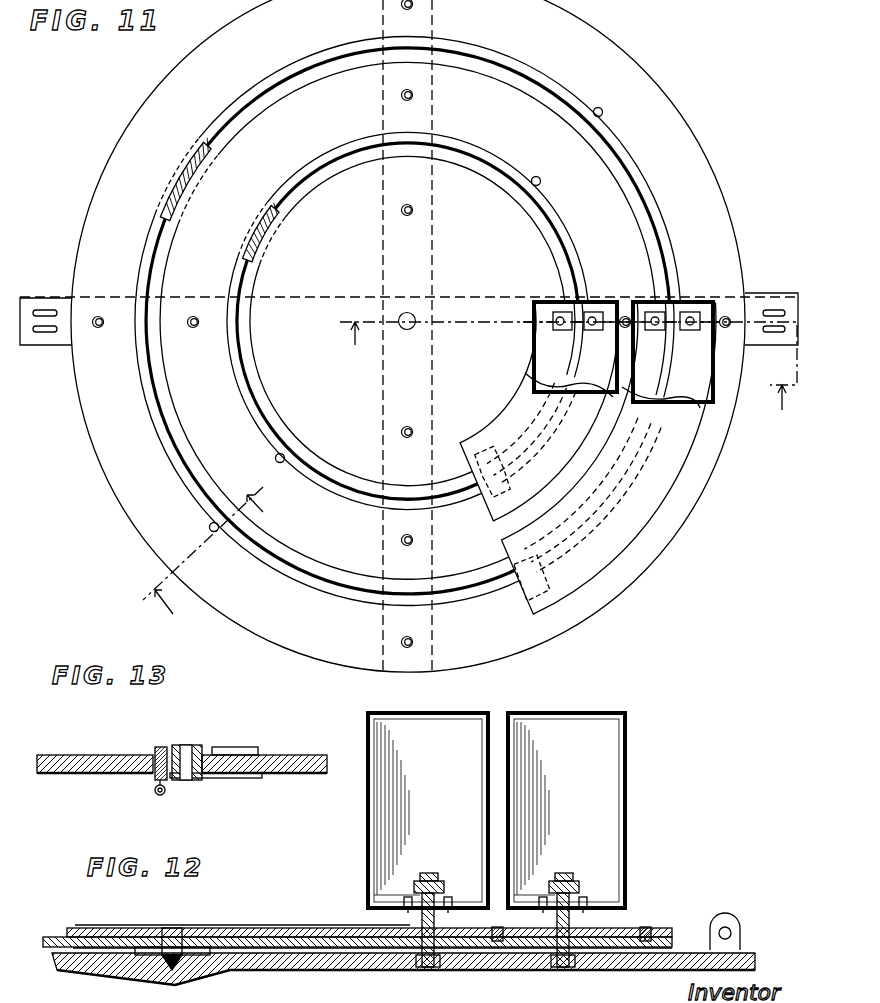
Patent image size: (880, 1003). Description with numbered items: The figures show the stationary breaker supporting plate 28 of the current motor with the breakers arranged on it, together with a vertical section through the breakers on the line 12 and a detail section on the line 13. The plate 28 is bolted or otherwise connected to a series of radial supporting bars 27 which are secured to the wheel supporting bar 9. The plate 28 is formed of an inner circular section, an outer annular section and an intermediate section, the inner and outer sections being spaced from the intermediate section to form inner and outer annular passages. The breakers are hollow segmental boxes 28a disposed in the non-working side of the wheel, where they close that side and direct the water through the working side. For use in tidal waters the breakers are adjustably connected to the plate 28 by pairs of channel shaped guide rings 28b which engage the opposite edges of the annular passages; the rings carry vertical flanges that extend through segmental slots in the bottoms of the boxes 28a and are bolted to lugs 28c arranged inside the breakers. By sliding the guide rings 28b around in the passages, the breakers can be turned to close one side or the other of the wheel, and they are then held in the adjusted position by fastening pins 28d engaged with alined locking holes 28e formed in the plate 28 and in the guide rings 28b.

In FIG. 11, the wheel supporting bar 9 is at (752, 298).
In FIG. 12, the wheel supporting bar 9 is at (302, 962).
In FIG. 11, the section line 12— 12 is at (555, 360).
In FIG. 11, the section line 13— 13 is at (195, 540).
In FIG. 11, the radial supporting bars 27 is at (436, 256).
In FIG. 12, the radial supporting bars 27 is at (55, 936).
In FIG. 11, the breaker supporting plate 28 is at (408, 341).
In FIG. 13, the breaker supporting plate 28 is at (62, 763).
In FIG. 11, the hollow segmental boxes 28a is at (588, 458).
In FIG. 12, the hollow segmental boxes 28a is at (496, 810).
In FIG. 11, the channel shaped guide rings 28b is at (310, 90).
In FIG. 13, the channel shaped guide rings 28b is at (198, 745).
In FIG. 12, the channel shaped guide rings 28b is at (279, 930).
In FIG. 11, the lugs 28c is at (594, 314).
In FIG. 12, the lugs 28c is at (575, 852).
In FIG. 11, the fastening pins 28d is at (281, 463).
In FIG. 13, the fastening pins 28d is at (156, 746).
In FIG. 11, the locking holes 28e is at (226, 104).
In FIG. 13, the locking holes 28e is at (152, 776).